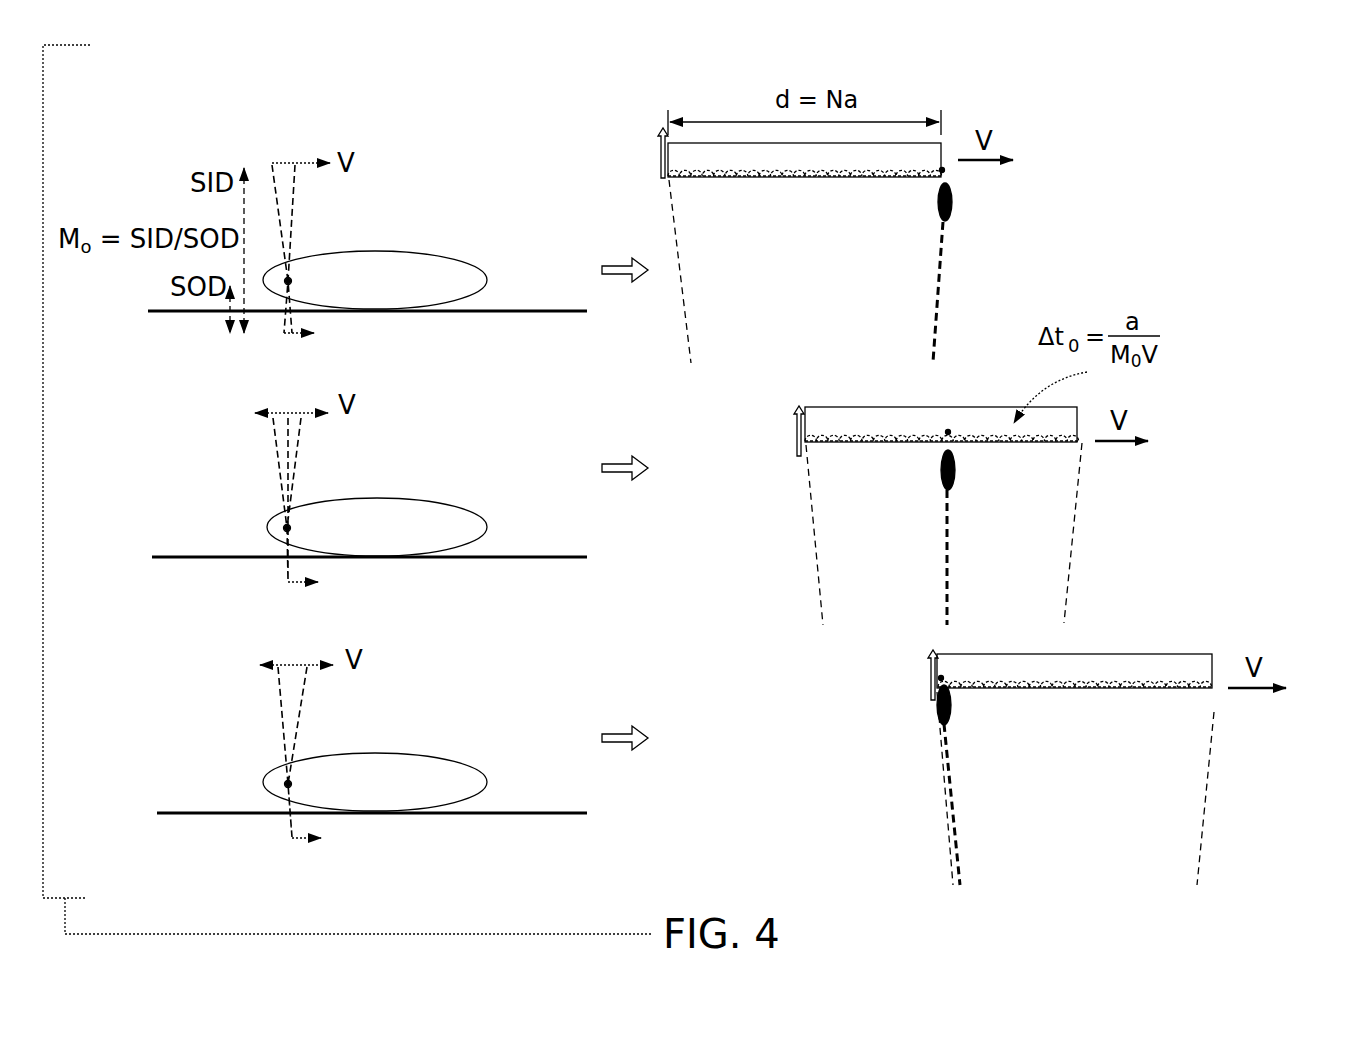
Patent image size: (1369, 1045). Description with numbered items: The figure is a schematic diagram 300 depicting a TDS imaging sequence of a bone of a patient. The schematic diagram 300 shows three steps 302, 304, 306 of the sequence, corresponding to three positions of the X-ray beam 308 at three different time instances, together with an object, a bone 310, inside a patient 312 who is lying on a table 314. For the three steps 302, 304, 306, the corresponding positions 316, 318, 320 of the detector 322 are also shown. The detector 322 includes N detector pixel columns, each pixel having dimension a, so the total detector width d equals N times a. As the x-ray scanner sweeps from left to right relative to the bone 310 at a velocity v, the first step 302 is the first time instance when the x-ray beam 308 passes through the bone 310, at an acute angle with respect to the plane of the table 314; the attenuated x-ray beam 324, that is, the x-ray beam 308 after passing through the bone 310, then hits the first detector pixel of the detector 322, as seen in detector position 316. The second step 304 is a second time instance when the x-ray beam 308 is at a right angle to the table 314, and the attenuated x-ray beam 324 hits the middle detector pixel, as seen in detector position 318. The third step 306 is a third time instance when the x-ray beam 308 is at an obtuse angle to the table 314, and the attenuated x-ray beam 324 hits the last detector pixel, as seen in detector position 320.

The schematic diagram 300 is at (979, 61).
The first step 302 is at (196, 151).
The second step 304 is at (206, 425).
The third step 306 is at (215, 689).
The X-ray beam 308 is at (276, 324).
The bone 310 is at (300, 281).
The patient 312 is at (476, 256).
The table 314 is at (537, 309).
The first detector position 316 is at (1046, 192).
The second detector position 318 is at (1171, 465).
The third detector position 320 is at (1251, 757).
The detector 322 is at (709, 111).
The attenuated x-ray beam 324 is at (298, 217).